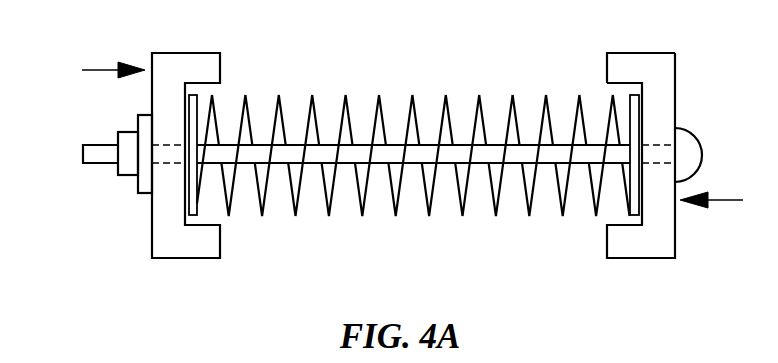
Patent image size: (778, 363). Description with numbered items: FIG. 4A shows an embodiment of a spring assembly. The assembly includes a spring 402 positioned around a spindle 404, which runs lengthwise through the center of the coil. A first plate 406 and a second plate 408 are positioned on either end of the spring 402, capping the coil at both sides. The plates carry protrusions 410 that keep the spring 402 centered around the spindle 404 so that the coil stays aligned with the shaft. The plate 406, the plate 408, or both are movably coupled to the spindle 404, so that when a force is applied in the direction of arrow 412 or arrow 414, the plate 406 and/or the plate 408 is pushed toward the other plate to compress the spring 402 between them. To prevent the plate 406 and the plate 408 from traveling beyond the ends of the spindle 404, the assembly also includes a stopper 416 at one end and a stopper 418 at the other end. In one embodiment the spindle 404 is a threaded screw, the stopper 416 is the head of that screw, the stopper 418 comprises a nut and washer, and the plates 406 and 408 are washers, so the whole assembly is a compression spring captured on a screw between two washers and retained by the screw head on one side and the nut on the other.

The spring 402 is at (342, 192).
The spindle 404 is at (83, 150).
The first plate 406 is at (675, 238).
The plate 408 is at (185, 258).
The protrusions 410 is at (607, 72).
The arrow 412 is at (713, 213).
The arrow 414 is at (113, 56).
The stopper 416 is at (698, 142).
The stopper 418 is at (138, 193).